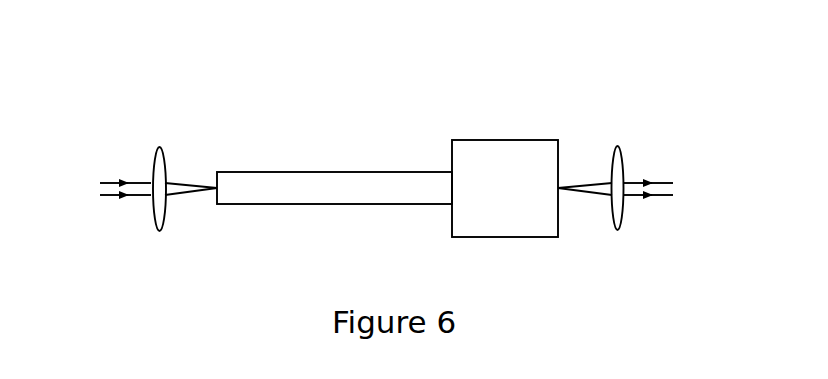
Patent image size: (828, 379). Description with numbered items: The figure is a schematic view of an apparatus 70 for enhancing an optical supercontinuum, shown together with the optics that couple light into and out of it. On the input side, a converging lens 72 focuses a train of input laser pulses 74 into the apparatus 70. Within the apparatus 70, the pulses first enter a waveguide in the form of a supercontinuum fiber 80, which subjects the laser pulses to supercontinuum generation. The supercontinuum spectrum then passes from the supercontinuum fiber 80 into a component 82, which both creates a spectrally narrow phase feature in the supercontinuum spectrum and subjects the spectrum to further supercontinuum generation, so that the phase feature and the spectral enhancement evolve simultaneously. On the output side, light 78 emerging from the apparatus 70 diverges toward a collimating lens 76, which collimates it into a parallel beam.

The apparatus 70 is at (241, 60).
The converging lens 72 is at (164, 158).
The train of input laser pulses 74 is at (137, 170).
The collimating lens 76 is at (612, 164).
The light emerging from apparatus 78 is at (580, 200).
The supercontinuum fiber 80 is at (346, 171).
The component 82 is at (497, 140).